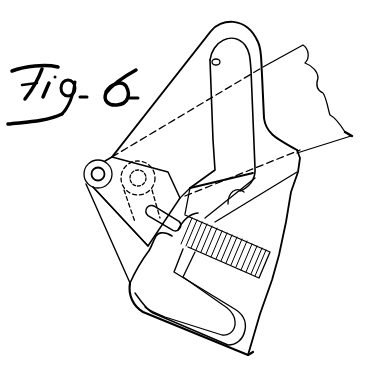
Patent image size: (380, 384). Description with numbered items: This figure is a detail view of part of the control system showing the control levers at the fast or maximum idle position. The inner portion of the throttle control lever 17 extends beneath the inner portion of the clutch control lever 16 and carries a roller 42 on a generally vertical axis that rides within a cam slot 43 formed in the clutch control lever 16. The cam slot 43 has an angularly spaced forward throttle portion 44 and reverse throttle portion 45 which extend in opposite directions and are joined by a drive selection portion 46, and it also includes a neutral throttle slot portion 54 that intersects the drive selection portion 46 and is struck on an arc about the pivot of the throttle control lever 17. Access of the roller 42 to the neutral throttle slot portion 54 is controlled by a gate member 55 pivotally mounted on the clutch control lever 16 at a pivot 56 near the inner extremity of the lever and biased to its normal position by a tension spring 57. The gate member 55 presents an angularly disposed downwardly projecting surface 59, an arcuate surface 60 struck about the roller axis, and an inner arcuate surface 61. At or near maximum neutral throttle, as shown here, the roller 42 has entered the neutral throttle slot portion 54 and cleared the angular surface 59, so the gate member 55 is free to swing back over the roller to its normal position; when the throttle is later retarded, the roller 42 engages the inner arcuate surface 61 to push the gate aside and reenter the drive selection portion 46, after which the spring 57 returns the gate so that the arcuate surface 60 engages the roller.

The clutch control lever 16 is at (260, 315).
The throttle control lever 17 is at (317, 93).
The roller 42 is at (147, 162).
The cam slot 43 is at (147, 293).
The forward throttle portion 44 is at (212, 62).
The reverse throttle portion 45 is at (170, 316).
The drive selection portion 46 is at (244, 192).
The neutral throttle slot portion 54 is at (148, 163).
The gate member 55 is at (105, 196).
The pivot 56 is at (98, 174).
The tension spring 57 is at (262, 260).
The angularly disposed downwardly projecting surface 59 is at (166, 168).
The arcuate surface 60 is at (150, 258).
The inner arcuate surface 61 is at (165, 220).